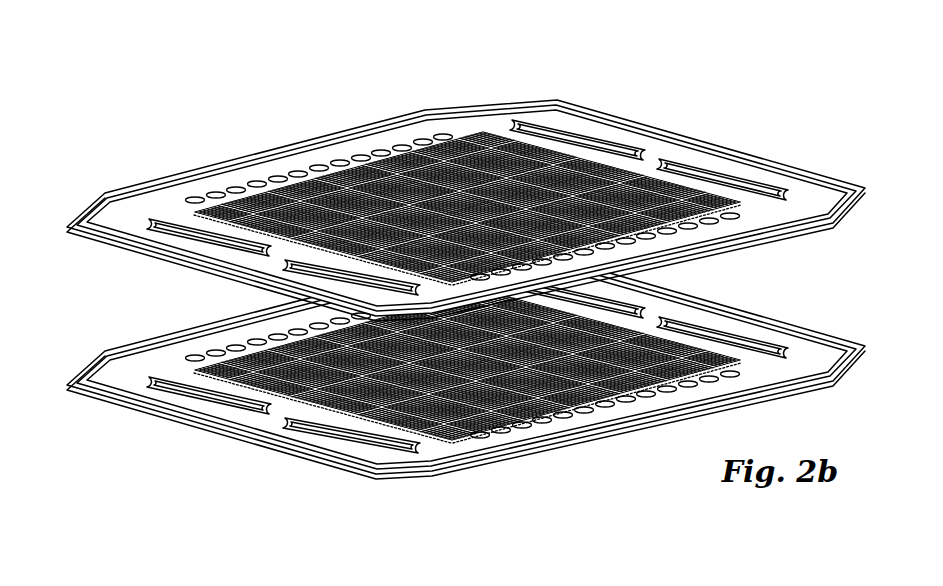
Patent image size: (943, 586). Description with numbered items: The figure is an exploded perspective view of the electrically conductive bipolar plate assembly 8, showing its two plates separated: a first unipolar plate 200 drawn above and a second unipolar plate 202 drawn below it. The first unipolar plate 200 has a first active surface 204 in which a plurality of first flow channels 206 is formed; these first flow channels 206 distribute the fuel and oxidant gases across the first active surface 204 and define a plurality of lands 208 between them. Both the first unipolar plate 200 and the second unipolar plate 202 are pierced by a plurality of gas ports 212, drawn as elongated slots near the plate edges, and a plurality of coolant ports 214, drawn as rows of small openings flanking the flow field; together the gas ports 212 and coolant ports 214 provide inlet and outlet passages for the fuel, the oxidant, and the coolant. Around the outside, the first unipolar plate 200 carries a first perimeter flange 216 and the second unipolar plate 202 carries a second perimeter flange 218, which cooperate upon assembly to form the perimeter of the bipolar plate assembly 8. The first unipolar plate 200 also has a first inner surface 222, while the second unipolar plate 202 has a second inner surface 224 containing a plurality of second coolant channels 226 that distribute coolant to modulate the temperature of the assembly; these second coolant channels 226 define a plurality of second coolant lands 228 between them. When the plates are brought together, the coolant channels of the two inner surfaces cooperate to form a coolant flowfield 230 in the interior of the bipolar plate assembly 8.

The bipolar plate assembly 8 is at (453, 284).
The first unipolar plate 200 is at (453, 175).
The second unipolar plate 202 is at (466, 398).
The first active surface 204 is at (481, 178).
The first flow channels 206 is at (221, 214).
The lands 208 is at (215, 226).
The gas ports 212 is at (524, 136).
The coolant ports 214 is at (340, 162).
The first perimeter flange 216 is at (858, 186).
The second perimeter flange 218 is at (800, 368).
The first inner surface 222 is at (150, 224).
The second inner surface 224 is at (465, 405).
The second coolant channels 226 is at (234, 371).
The second coolant lands 228 is at (222, 375).
The coolant flowfield 230 is at (305, 367).